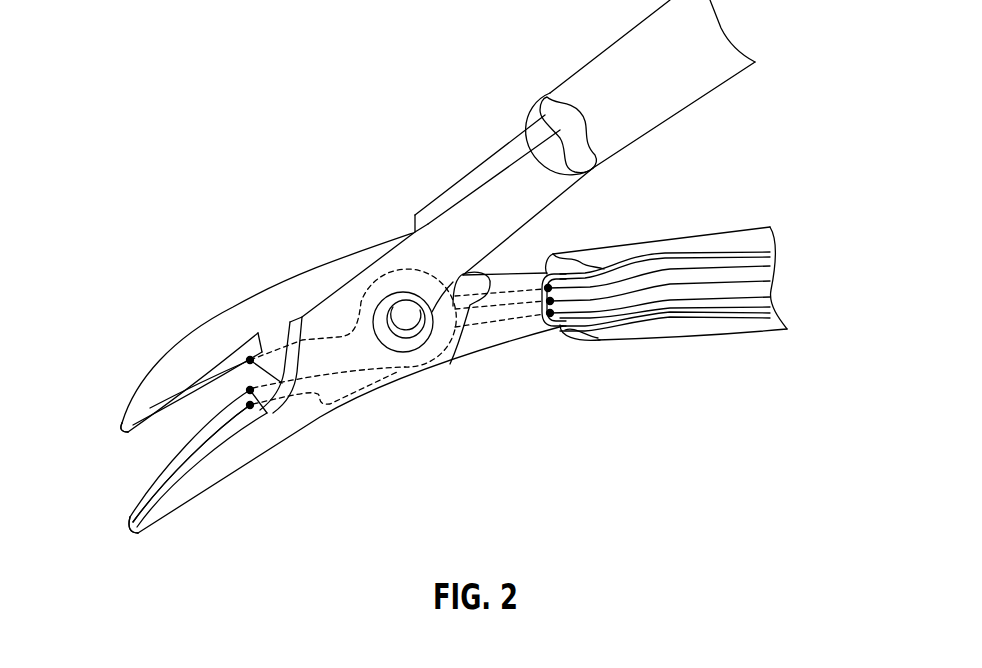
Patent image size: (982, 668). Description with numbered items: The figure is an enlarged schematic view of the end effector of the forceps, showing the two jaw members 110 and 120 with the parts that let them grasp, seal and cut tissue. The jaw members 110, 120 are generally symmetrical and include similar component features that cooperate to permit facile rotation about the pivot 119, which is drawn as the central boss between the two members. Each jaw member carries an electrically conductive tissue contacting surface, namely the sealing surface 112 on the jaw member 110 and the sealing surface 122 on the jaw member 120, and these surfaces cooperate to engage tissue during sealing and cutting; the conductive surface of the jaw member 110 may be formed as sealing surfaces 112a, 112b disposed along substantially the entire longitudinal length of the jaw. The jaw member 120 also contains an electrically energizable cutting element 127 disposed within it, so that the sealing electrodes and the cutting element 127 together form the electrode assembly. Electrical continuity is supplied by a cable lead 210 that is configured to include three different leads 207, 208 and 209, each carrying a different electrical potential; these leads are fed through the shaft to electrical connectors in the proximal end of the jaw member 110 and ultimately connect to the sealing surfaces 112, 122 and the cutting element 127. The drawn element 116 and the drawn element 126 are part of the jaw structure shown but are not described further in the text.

The jaw member 110 is at (318, 369).
The upper jaw member 116 is at (160, 382).
The tissue contacting surface 112 is at (136, 430).
The lower jaw member 126 is at (188, 482).
The cutting element 127 is at (143, 506).
The tissue contacting surface 122 is at (128, 522).
The jaw member 120 is at (266, 455).
The pivot 119 is at (407, 320).
The tissue contacting surface 112a is at (492, 168).
The tissue contacting surface 112b is at (500, 332).
The cable lead 207 is at (627, 303).
The cable lead 208 is at (665, 283).
The cable lead 209 is at (702, 267).
The cable lead 210 is at (702, 305).